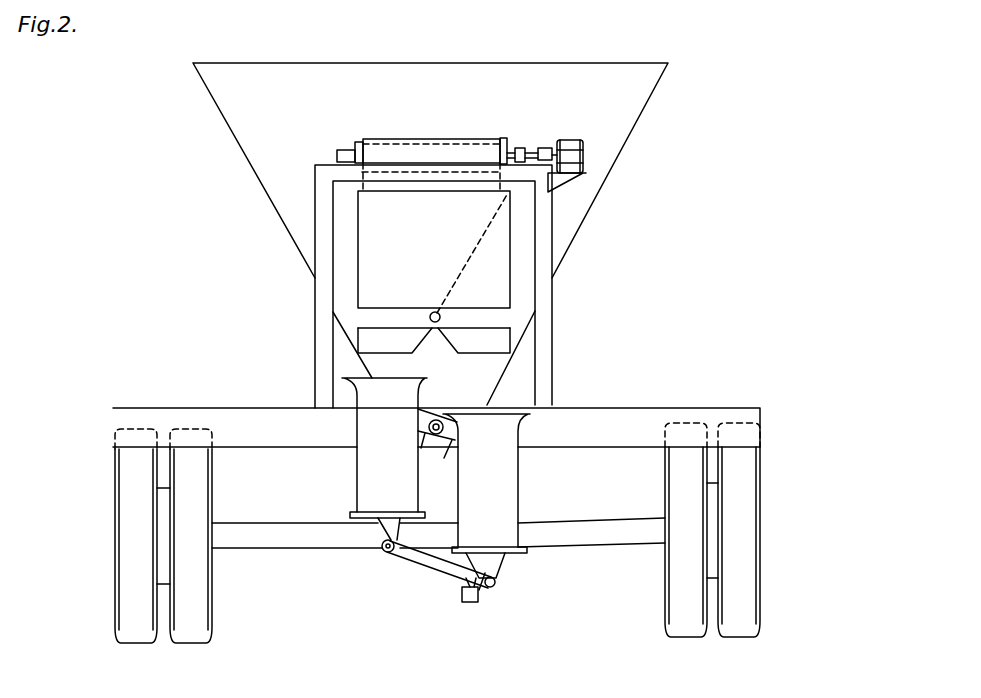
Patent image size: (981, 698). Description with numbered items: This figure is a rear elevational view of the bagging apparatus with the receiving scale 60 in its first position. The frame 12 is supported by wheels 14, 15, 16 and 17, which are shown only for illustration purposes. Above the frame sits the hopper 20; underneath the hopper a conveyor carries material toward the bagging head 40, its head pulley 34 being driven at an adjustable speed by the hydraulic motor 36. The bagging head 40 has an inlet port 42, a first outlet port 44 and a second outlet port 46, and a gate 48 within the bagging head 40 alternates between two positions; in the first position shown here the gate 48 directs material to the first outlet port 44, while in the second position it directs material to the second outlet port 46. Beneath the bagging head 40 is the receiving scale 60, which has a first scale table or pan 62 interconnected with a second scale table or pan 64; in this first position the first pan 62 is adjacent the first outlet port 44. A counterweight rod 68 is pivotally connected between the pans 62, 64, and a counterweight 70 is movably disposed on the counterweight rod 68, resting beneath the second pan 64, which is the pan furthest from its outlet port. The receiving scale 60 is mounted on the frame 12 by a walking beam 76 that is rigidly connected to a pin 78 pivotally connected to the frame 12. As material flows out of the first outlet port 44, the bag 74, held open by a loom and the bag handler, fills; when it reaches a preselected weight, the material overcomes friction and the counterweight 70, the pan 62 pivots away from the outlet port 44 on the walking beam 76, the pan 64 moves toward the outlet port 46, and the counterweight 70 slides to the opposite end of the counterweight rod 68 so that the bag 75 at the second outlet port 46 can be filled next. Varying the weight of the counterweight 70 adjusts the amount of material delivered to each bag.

The frame 12 is at (205, 409).
The wheel 14 is at (128, 612).
The wheel 15 is at (198, 615).
The wheel 16 is at (690, 615).
The wheel 17 is at (752, 602).
The hopper 20 is at (630, 111).
The head pulley 34 is at (357, 140).
The hydraulic motor 36 is at (578, 137).
The bagging head 40 is at (368, 290).
The inlet port 42 is at (428, 193).
The first outlet port 44 is at (388, 353).
The second outlet port 46 is at (483, 353).
The gate 48 is at (473, 254).
The receiving scale 60 is at (369, 522).
The first scale table or pan 62 is at (360, 516).
The second scale table or pan 64 is at (515, 556).
The counterweight rod 68 is at (428, 567).
The counterweight 70 is at (470, 603).
The bag 74 is at (372, 427).
The bag 75 is at (493, 500).
The walking beam 76 is at (455, 440).
The pin 78 is at (437, 433).